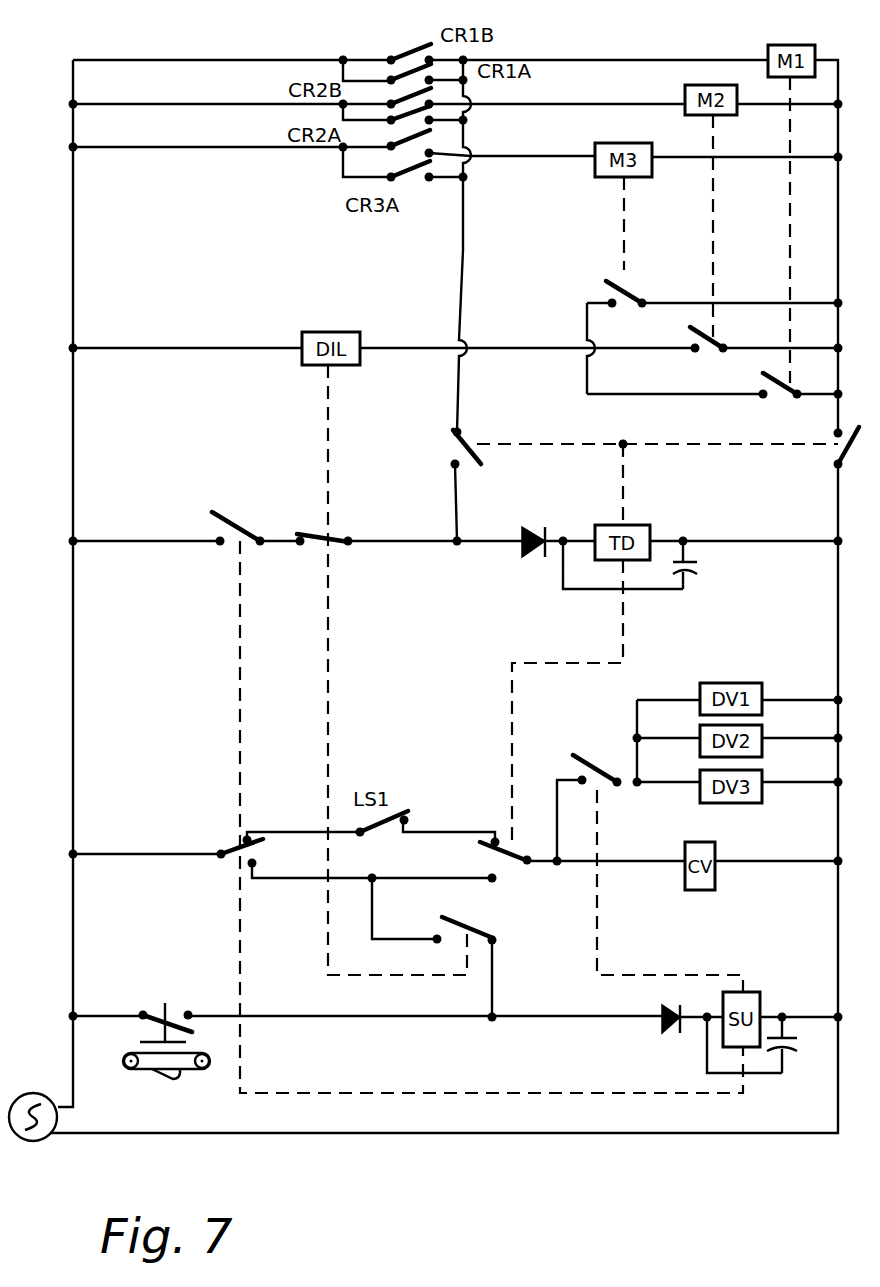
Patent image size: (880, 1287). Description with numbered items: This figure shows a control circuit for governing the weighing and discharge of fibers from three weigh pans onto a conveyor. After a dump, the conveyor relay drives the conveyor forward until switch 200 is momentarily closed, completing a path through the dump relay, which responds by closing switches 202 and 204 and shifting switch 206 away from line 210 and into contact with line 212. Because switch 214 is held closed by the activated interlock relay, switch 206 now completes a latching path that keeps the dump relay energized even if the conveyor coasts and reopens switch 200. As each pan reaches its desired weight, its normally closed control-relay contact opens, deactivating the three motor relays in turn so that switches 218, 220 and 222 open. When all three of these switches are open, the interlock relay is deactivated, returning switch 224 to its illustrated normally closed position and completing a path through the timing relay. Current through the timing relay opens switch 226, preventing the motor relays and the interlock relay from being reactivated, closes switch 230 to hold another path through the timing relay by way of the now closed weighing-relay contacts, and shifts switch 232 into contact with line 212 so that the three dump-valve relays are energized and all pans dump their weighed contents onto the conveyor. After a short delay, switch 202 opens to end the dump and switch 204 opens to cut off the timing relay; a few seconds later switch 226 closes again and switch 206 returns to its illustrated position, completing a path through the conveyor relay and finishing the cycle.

The switch 200 is at (156, 1012).
The switch 202 is at (608, 743).
The switch 204 is at (242, 523).
The switch 206 is at (221, 851).
The line 210 is at (244, 831).
The line 212 is at (281, 879).
The switch 214 is at (472, 921).
The switch 218 is at (779, 397).
The switch 220 is at (713, 352).
The switch 222 is at (627, 293).
The switch 224 is at (317, 538).
The switch 226 is at (845, 444).
The switch 230 is at (470, 444).
The switch 232 is at (507, 843).